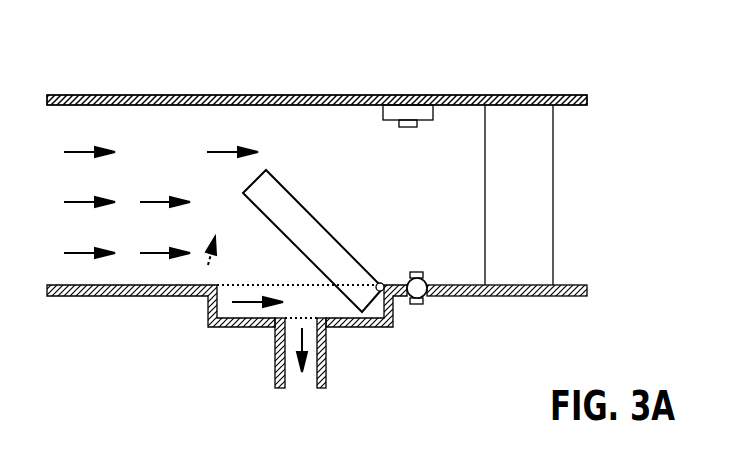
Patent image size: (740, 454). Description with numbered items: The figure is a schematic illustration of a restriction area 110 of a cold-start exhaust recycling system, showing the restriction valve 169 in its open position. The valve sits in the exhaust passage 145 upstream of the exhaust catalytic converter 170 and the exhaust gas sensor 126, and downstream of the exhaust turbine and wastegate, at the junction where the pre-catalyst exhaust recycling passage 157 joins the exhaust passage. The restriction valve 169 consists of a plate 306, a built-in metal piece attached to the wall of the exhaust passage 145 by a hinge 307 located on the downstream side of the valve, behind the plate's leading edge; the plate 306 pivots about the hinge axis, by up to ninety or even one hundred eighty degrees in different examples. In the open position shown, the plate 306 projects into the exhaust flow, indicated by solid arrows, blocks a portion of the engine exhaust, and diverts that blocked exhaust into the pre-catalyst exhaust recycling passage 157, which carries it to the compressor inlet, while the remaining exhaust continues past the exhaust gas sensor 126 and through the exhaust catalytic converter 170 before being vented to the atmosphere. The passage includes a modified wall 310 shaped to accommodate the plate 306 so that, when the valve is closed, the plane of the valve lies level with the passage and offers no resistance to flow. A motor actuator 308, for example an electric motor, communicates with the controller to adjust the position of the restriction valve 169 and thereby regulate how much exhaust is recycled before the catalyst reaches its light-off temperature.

The restriction area 110 is at (130, 60).
The exhaust gas sensor 126 is at (437, 95).
The exhaust passage 145 is at (570, 95).
The exhaust catalytic converter 170 is at (553, 228).
The restriction valve 169 is at (314, 182).
The plate 306 is at (344, 243).
The hinge 307 is at (383, 282).
The motor actuator 308 is at (420, 304).
The modified wall 310 is at (247, 330).
The pre-catalyst exhaust recycling passage 157 is at (328, 375).